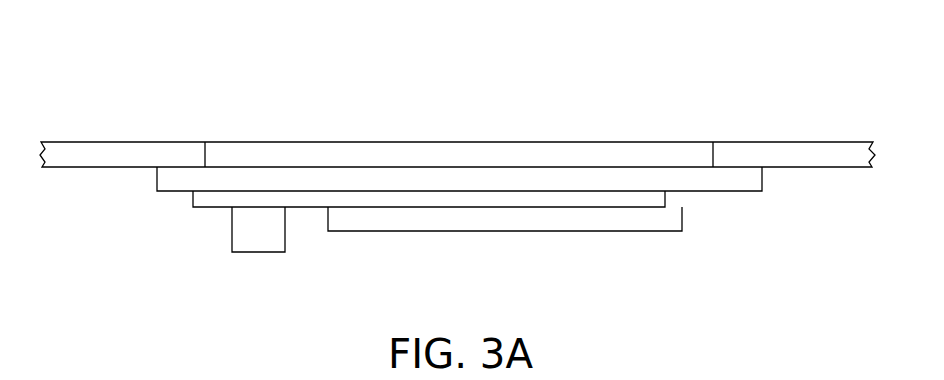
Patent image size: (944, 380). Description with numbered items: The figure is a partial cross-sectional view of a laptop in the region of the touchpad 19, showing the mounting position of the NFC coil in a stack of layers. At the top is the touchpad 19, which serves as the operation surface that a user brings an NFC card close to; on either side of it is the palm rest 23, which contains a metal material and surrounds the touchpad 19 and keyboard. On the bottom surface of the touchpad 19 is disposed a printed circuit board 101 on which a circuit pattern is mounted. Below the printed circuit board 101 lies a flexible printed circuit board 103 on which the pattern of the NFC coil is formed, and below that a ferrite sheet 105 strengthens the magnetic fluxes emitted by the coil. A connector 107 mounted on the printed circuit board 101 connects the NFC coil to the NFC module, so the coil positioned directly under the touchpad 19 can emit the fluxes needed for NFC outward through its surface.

The touchpad 19 is at (510, 155).
The palm rest 23 is at (158, 157).
The printed circuit board 101 is at (620, 175).
The flexible printed circuit board 103 is at (593, 200).
The ferrite sheet 105 is at (515, 220).
The connector 107 is at (253, 242).